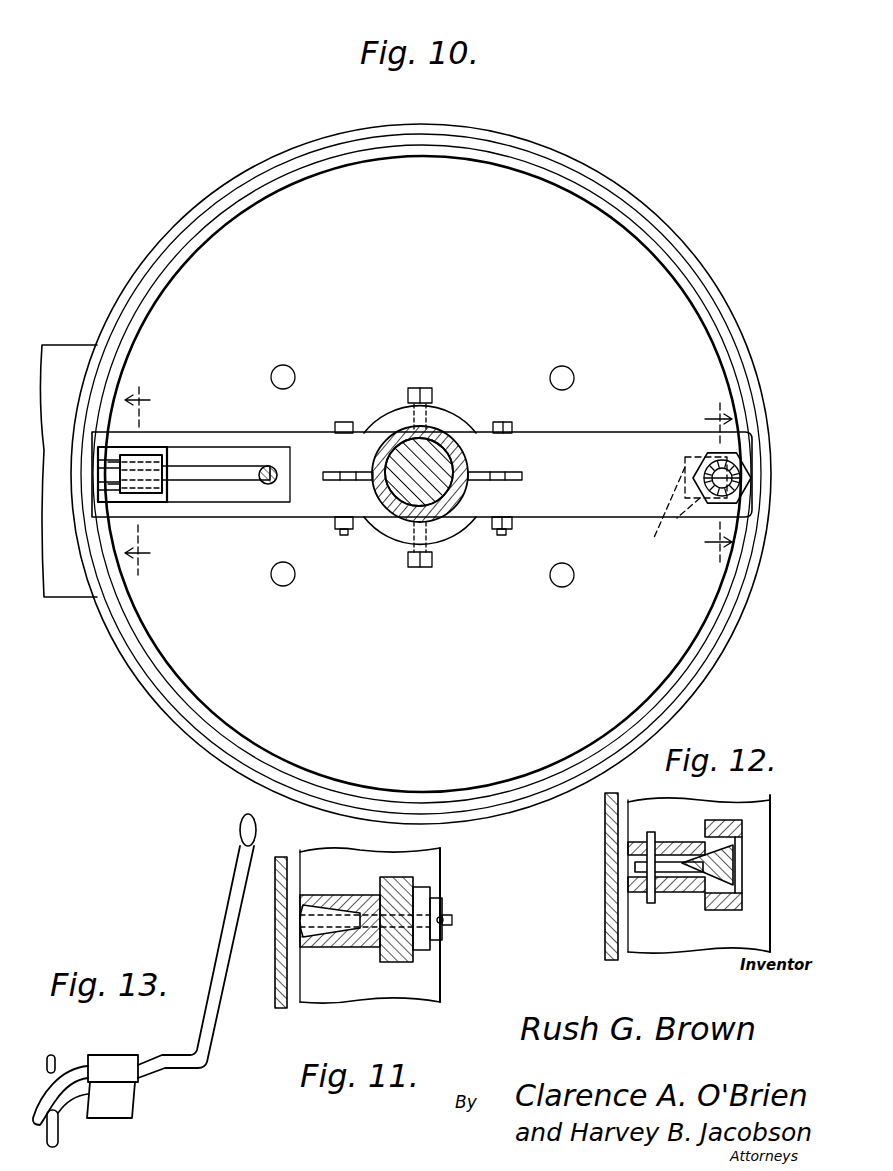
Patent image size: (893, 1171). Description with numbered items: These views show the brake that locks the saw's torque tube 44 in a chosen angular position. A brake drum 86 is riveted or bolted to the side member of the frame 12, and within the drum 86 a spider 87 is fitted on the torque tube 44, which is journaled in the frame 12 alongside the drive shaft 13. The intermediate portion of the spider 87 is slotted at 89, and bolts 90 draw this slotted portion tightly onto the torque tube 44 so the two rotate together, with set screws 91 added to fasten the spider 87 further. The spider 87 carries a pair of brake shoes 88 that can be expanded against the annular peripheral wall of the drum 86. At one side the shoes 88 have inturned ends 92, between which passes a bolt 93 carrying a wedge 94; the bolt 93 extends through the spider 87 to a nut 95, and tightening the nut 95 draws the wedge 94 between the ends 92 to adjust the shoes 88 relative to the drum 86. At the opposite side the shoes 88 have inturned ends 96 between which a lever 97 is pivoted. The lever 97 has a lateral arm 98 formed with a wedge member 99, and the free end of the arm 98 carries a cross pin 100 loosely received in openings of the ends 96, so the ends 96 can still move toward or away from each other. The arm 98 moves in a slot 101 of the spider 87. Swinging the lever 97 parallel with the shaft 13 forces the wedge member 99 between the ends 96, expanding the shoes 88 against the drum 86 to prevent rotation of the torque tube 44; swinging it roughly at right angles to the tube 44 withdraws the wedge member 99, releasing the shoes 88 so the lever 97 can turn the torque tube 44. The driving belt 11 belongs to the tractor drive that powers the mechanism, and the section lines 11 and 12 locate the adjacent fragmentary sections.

In FIG. 10, the endless driving belt 11 is at (716, 485).
In FIG. 10, the frame 12 is at (140, 480).
In FIG. 10, the drive shaft 13 is at (432, 500).
In FIG. 10, the torque tube 44 is at (440, 440).
In FIG. 10, the brake drum 86 is at (147, 697).
In FIG. 11, the brake drum 86 is at (400, 993).
In FIG. 12, the brake drum 86 is at (755, 862).
In FIG. 10, the spider 87 is at (566, 434).
In FIG. 11, the spider 87 is at (400, 963).
In FIG. 12, the spider 87 is at (735, 820).
In FIG. 10, the brake shoes 88 is at (205, 243).
In FIG. 11, the brake shoes 88 is at (312, 863).
In FIG. 12, the brake shoes 88 is at (628, 820).
In FIG. 10, the slot 89 is at (333, 482).
In FIG. 10, the bolts 90 is at (345, 536).
In FIG. 10, the set screws 91 is at (418, 568).
In FIG. 10, the inturned ends 92 is at (682, 512).
In FIG. 11, the inturned ends 92 is at (335, 895).
In FIG. 10, the bolt 93 is at (735, 475).
In FIG. 11, the bolt 93 is at (452, 920).
In FIG. 11, the wedge 94 is at (300, 920).
In FIG. 10, the nut 95 is at (708, 451).
In FIG. 11, the nut 95 is at (425, 888).
In FIG. 10, the inturned ends 96 is at (160, 470).
In FIG. 12, the inturned ends 96 is at (668, 840).
In FIG. 10, the lever 97 is at (272, 468).
In FIG. 13, the lever 97 is at (237, 865).
In FIG. 10, the lateral arm 98 is at (228, 481).
In FIG. 12, the lateral arm 98 is at (669, 867).
In FIG. 13, the lateral arm 98 is at (168, 1070).
In FIG. 10, the wedge member 99 is at (112, 500).
In FIG. 12, the wedge member 99 is at (707, 860).
In FIG. 13, the wedge member 99 is at (113, 1065).
In FIG. 10, the cross pin 100 is at (147, 450).
In FIG. 12, the cross pin 100 is at (648, 905).
In FIG. 13, the cross pin 100 is at (72, 1030).
In FIG. 10, the slot 101 is at (265, 500).
In FIG. 12, the slot 101 is at (742, 880).